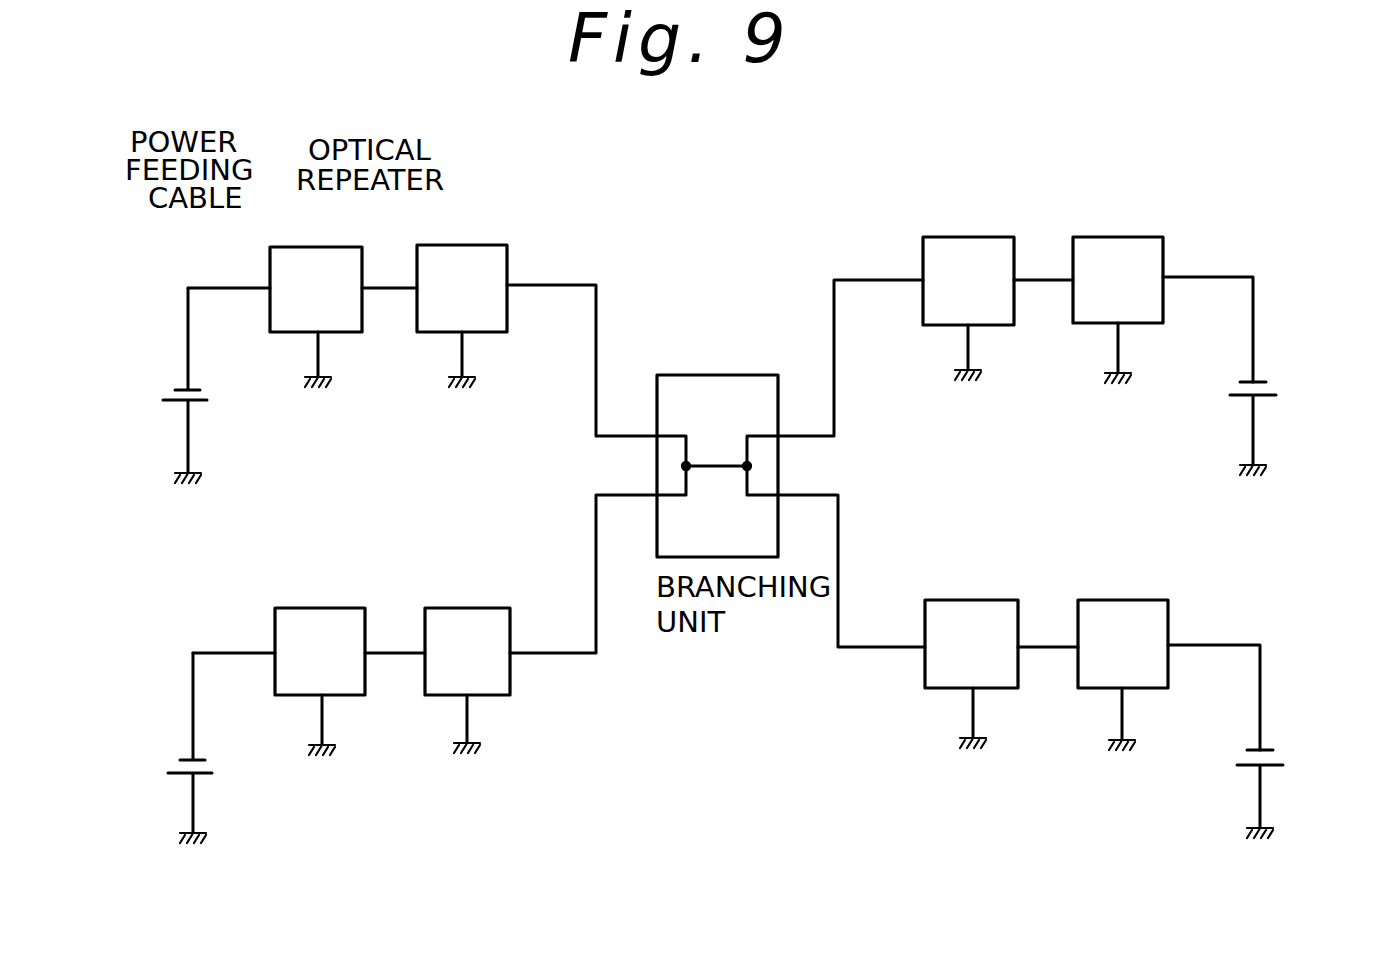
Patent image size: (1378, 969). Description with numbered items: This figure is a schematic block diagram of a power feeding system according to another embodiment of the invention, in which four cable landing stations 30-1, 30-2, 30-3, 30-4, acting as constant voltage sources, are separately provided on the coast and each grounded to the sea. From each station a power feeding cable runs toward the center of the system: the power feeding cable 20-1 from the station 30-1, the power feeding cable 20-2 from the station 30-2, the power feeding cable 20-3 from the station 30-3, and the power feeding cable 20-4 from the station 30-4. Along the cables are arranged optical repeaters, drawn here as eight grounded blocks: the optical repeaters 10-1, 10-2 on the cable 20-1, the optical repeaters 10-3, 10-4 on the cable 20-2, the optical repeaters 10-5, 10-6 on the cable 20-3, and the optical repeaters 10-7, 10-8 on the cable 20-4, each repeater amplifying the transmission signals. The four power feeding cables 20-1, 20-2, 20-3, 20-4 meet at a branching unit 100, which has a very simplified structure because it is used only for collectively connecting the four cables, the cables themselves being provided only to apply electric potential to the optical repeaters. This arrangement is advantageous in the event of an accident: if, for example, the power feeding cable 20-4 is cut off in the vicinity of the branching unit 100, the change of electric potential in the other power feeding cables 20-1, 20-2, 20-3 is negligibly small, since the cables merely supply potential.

The branching unit 100 is at (727, 375).
The optical repeater 10-1 is at (340, 247).
The optical repeater 10-2 is at (487, 245).
The optical repeater 10-3 is at (340, 608).
The optical repeater 10-4 is at (482, 608).
The optical repeater 10-5 is at (987, 237).
The optical repeater 10-6 is at (1142, 237).
The optical repeater 10-7 is at (980, 600).
The optical repeater 10-8 is at (1129, 600).
The power feeding cable 20-1 is at (218, 288).
The power feeding cable 20-2 is at (214, 653).
The power feeding cable 20-3 is at (858, 280).
The power feeding cable 20-4 is at (862, 647).
The cable landing station 30-1 is at (172, 392).
The cable landing station 30-2 is at (172, 757).
The cable landing station 30-3 is at (1270, 391).
The cable landing station 30-4 is at (1276, 757).